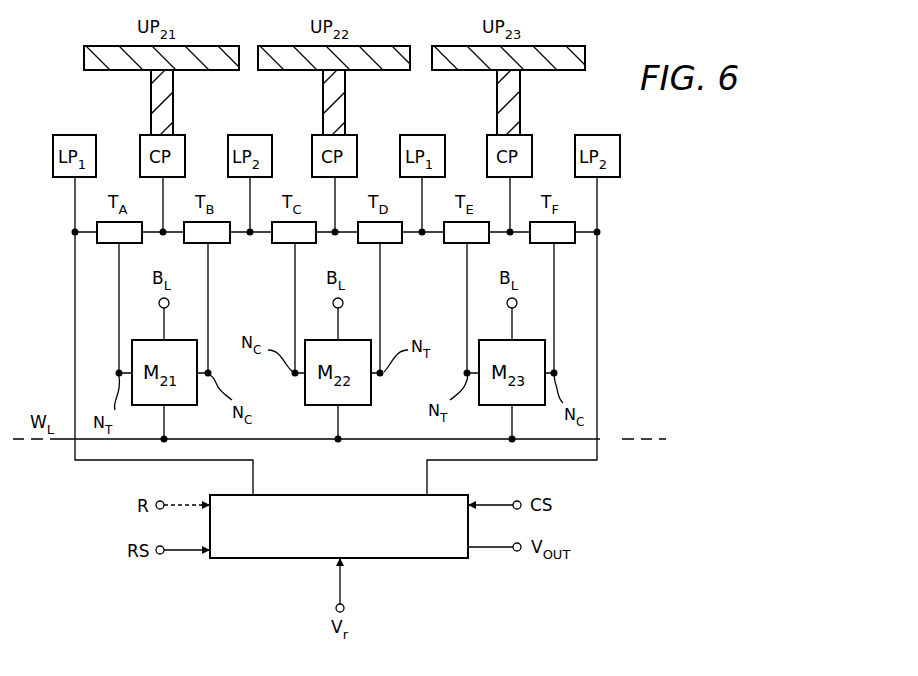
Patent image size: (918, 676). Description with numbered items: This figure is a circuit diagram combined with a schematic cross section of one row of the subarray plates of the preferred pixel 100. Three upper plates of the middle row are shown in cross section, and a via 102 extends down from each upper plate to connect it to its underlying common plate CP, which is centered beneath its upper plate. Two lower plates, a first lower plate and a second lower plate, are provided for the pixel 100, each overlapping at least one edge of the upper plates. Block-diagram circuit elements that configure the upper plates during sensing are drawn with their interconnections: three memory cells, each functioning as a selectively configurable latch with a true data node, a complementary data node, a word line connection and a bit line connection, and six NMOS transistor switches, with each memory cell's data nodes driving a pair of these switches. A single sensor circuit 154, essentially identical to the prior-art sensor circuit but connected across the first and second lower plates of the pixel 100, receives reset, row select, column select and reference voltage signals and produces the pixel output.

The pixel 100 is at (640, 510).
The via 102 is at (151, 93).
The sensor circuit 154 is at (404, 559).